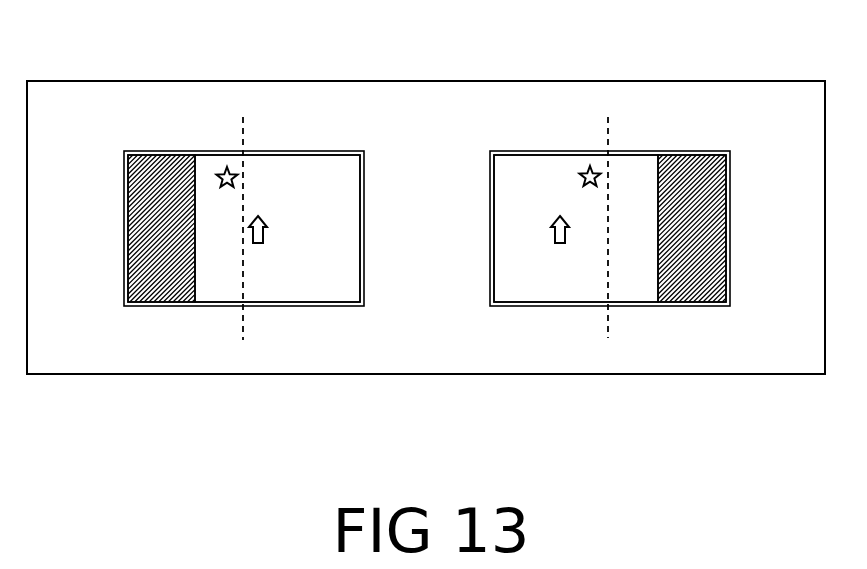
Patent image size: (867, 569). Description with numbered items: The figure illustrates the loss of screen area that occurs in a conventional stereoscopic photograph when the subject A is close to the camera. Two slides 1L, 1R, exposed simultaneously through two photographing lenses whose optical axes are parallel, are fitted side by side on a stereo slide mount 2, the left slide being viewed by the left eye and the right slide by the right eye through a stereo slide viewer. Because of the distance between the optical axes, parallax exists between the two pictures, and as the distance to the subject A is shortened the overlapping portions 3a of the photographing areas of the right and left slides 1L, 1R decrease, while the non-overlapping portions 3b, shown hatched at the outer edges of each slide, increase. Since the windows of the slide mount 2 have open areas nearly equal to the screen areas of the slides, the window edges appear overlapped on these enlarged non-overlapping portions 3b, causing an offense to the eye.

The stereo slide mount 2 is at (76, 69).
The left slide 1L is at (324, 173).
The right slide 1R is at (633, 180).
The overlapping portions 3a is at (299, 285).
The non-overlapping portions 3b is at (153, 283).
The subject A is at (262, 215).